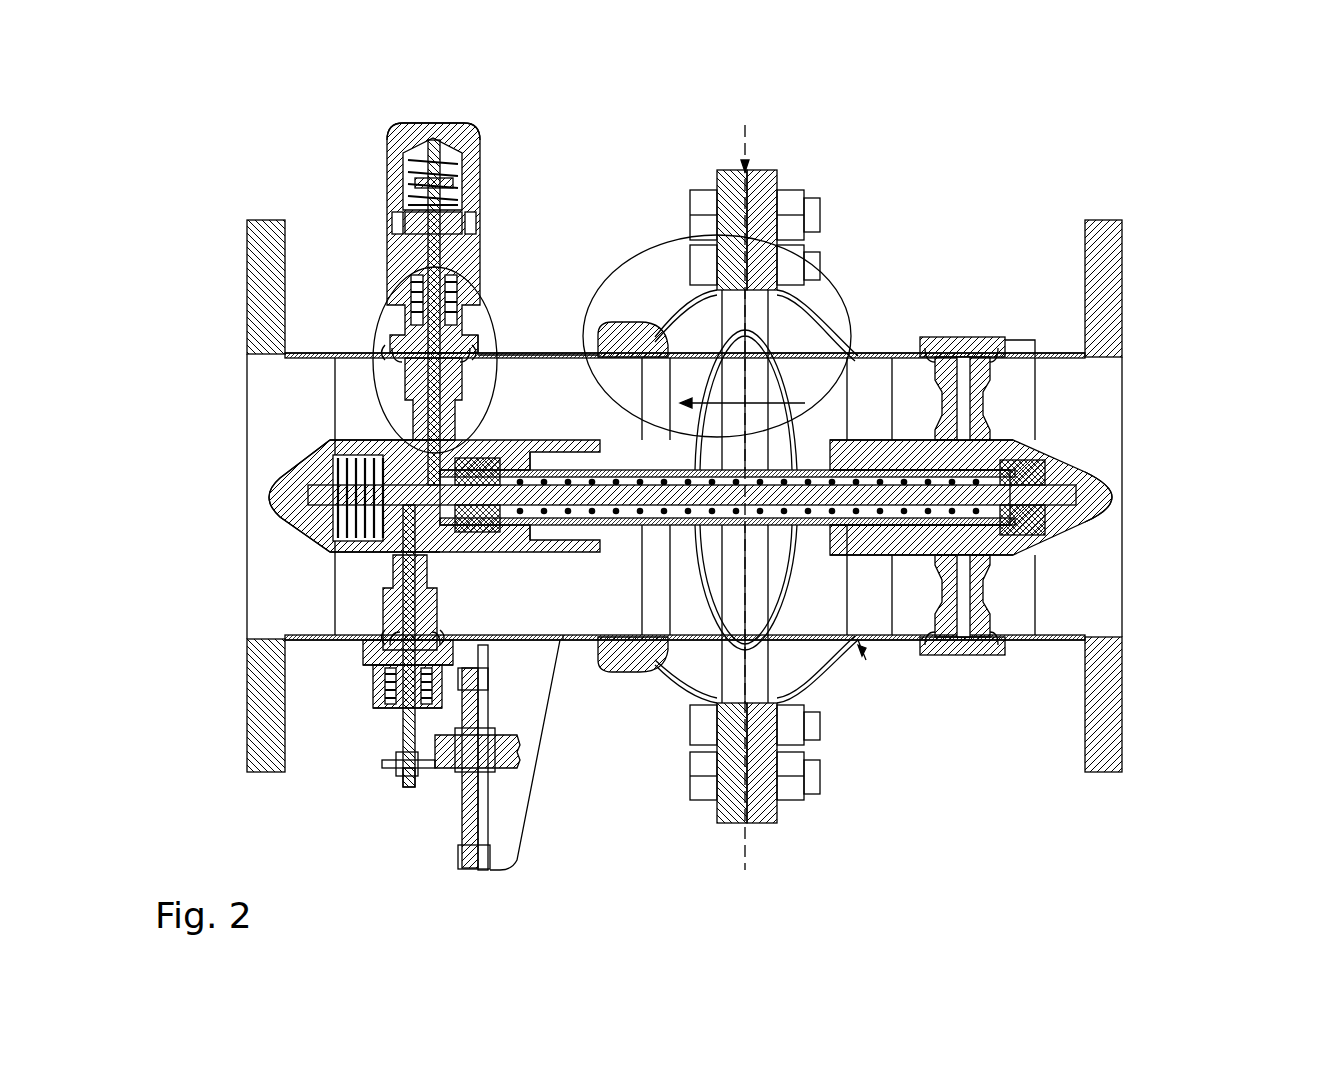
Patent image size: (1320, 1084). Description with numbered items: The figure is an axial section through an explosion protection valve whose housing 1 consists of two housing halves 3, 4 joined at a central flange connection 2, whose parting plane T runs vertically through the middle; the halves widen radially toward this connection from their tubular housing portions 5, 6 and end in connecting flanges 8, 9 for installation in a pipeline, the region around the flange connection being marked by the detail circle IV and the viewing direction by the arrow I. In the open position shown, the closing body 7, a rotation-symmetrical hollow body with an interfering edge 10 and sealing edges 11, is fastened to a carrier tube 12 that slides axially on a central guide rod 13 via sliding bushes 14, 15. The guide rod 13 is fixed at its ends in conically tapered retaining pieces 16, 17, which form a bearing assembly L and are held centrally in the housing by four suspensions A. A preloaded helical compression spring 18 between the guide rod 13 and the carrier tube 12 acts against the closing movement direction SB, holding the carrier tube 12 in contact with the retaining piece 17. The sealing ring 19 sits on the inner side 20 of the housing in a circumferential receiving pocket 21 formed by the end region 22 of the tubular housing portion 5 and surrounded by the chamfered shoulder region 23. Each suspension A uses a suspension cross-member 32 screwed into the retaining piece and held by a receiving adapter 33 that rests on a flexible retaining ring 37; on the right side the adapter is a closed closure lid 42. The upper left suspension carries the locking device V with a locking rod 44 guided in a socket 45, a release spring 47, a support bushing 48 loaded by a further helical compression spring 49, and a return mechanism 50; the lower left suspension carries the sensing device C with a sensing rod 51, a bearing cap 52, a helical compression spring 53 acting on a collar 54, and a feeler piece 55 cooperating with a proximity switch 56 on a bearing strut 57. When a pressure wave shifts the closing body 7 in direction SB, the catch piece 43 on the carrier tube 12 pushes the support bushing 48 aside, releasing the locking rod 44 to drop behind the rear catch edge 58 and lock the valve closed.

The housing 1 is at (893, 340).
The flange connection 2 is at (700, 300).
The housing half 3 is at (515, 342).
The housing half 4 is at (860, 560).
The tubular housing portion 5 is at (563, 642).
The tubular housing portion 6 is at (1030, 348).
The closing body 7 is at (795, 340).
The connecting flange 8 is at (268, 283).
The connecting flange 9 is at (1110, 282).
The interfering edge 10 is at (806, 700).
The sealing edge 11 is at (722, 712).
The carrier tube 12 is at (978, 562).
The guide rod 13 is at (692, 705).
The sliding bush 14 is at (495, 530).
The sliding bush 15 is at (1030, 452).
The retaining piece 16 is at (340, 480).
The retaining piece 17 is at (1095, 494).
The helical compression spring 18 is at (905, 560).
The sealing ring 19 is at (643, 316).
The inner side 20 is at (340, 360).
The receiving pocket 21 is at (620, 318).
The end region 22 is at (488, 350).
The shoulder region 23 is at (604, 662).
The suspension cross-member 32 is at (408, 410).
The receiving adapter 33 is at (386, 348).
The retaining ring 37 is at (388, 352).
The closure lid 42 is at (974, 337).
The catch piece 43 is at (1040, 522).
The locking rod 44 is at (432, 170).
The socket 45 is at (473, 222).
The release spring 47 is at (418, 290).
The support bushing 48 is at (340, 545).
The helical compression spring 49 is at (268, 497).
The return mechanism 50 is at (390, 170).
The sensing rod 51 is at (400, 765).
The bearing cap 52 is at (392, 702).
The helical compression spring 53 is at (395, 708).
The collar 54 is at (372, 683).
The feeler piece 55 is at (390, 768).
The proximity switch 56 is at (480, 750).
The bearing strut 57 is at (500, 815).
The rear catch edge 58 is at (506, 438).
The suspension A is at (372, 420).
The sensing device C is at (372, 690).
The bearing assembly L is at (1108, 506).
The locking device V is at (383, 200).
The parting plane T is at (752, 858).
The closing movement direction SB is at (862, 350).
The section IV is at (786, 352).
The section I is at (565, 858).